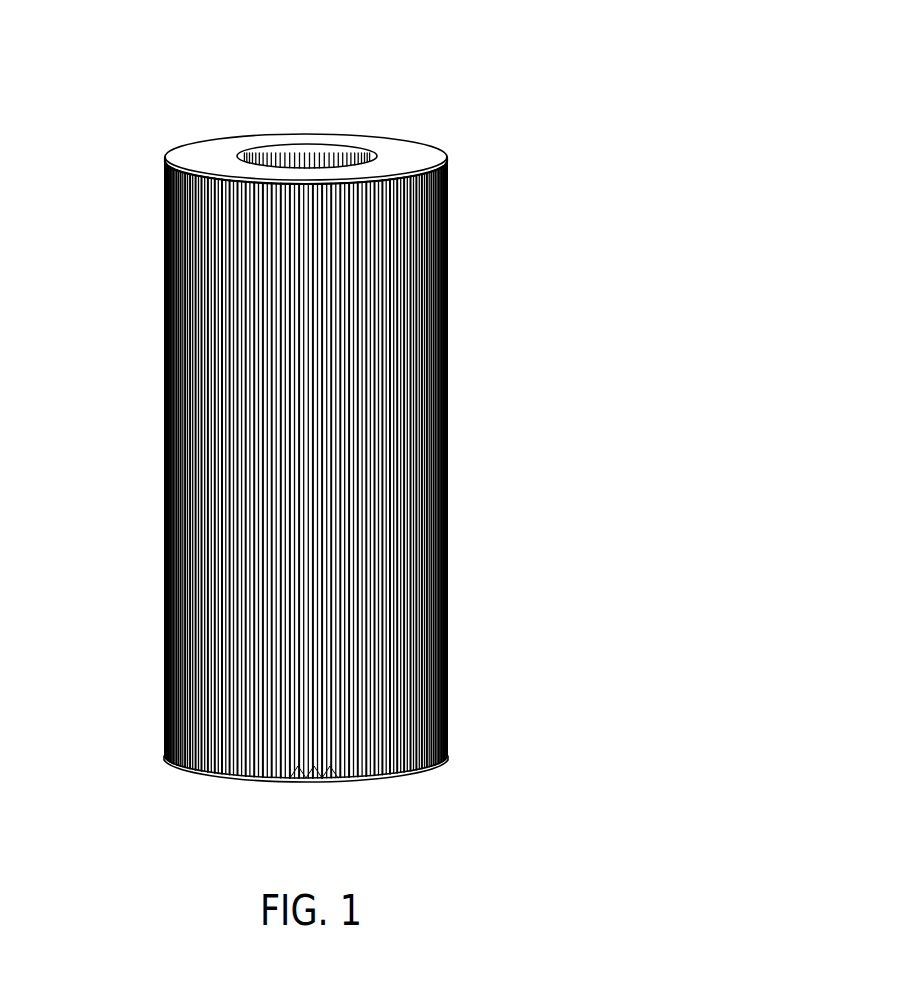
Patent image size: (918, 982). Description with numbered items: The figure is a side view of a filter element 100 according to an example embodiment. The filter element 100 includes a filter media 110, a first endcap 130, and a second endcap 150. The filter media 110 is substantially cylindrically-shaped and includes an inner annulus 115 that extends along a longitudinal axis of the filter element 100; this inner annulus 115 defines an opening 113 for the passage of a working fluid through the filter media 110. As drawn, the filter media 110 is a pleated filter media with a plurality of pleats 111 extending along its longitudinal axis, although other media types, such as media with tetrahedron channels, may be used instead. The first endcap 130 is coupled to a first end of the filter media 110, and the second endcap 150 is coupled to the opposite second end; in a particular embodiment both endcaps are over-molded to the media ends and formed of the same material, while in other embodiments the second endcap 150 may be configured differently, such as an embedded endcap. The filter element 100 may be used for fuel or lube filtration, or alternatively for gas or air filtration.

The filter element 100 is at (512, 45).
The filter media 110 is at (138, 382).
The pleats 111 is at (435, 360).
The opening 113 is at (300, 104).
The inner annulus 115 is at (322, 163).
The first endcap 130 is at (215, 150).
The second endcap 150 is at (192, 777).